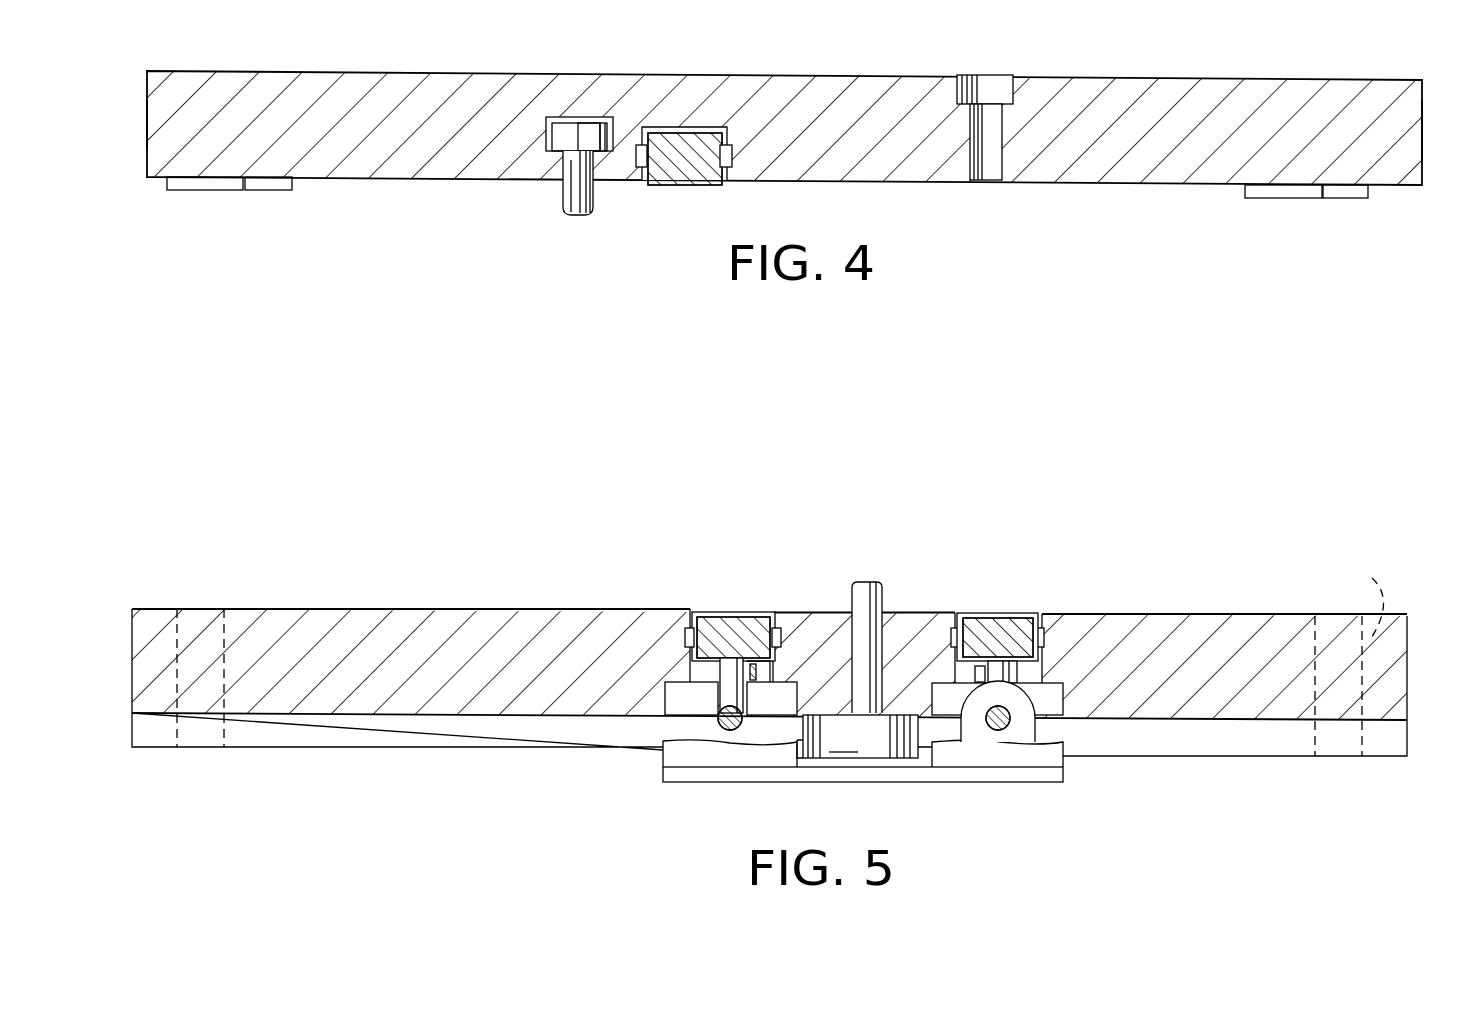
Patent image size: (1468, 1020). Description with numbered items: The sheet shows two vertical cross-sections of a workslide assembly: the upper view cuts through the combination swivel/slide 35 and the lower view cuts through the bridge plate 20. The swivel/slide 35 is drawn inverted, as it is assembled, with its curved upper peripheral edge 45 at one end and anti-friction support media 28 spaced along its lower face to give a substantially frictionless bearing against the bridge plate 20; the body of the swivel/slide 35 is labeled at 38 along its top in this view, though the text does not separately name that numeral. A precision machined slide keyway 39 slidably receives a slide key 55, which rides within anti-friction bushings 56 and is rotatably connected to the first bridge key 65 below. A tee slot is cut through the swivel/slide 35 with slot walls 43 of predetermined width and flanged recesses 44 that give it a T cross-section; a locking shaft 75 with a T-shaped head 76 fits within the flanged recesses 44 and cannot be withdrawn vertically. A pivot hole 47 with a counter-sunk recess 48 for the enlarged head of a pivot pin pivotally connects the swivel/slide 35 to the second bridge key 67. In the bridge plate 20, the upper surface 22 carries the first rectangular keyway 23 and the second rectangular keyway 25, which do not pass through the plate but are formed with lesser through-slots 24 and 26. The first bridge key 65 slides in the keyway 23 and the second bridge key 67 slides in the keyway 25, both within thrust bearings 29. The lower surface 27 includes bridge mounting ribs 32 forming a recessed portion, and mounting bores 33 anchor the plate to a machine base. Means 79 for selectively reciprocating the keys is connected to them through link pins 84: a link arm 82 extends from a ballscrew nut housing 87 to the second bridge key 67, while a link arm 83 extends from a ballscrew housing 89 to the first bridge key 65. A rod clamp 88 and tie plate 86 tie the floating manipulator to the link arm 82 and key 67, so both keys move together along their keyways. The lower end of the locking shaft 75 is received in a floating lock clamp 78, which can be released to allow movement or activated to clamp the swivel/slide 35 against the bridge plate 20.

In FIG. 5, the bridge plate 20 is at (770, 662).
In FIG. 5, the upper surface 22 is at (1228, 616).
In FIG. 5, the first rectangular keyway 23 is at (882, 612).
In FIG. 5, the through-slot 24 is at (762, 676).
In FIG. 5, the second rectangular keyway 25 is at (1013, 604).
In FIG. 5, the through-slot 26 is at (975, 672).
In FIG. 5, the lower surface 27 is at (1188, 722).
In FIG. 4, the anti-friction support media 28 is at (203, 192).
In FIG. 5, the thrust bearings 29 is at (782, 630).
In FIG. 5, the bridge mounting ribs 32 is at (153, 735).
In FIG. 5, the mounting bores 33 is at (1376, 582).
In FIG. 4, the combination swivel/slide 35 is at (1297, 86).
In FIG. 4, the board top surface 38 is at (365, 71).
In FIG. 4, the slide keyway 39 is at (698, 154).
In FIG. 4, the slot walls 43 is at (565, 185).
In FIG. 4, the flanged recesses 44 is at (560, 128).
In FIG. 4, the curved upper peripheral edge 45 is at (147, 121).
In FIG. 4, the pivot hole 47 is at (995, 165).
In FIG. 4, the counter-sunk recess 48 is at (1010, 88).
In FIG. 4, the slide key 55 is at (674, 172).
In FIG. 4, the bushings 56 is at (640, 166).
In FIG. 5, the first bridge key 65 is at (714, 617).
In FIG. 5, the second bridge key 67 is at (1002, 620).
In FIG. 4, the locking shaft 75 is at (576, 206).
In FIG. 5, the locking shaft 75 is at (862, 588).
In FIG. 4, the T-shaped head 76 is at (580, 130).
In FIG. 5, the floating lock clamp 78 is at (864, 736).
In FIG. 5, the means for selectively reciprocating the bridge keys 79 is at (824, 752).
In FIG. 5, the link arm 82 is at (1001, 735).
In FIG. 5, the link arm 83 is at (735, 732).
In FIG. 5, the link pin 84 is at (727, 695).
In FIG. 5, the tie plate 86 is at (710, 772).
In FIG. 5, the ballscrew nut housing 87 is at (975, 760).
In FIG. 5, the rod clamp 88 is at (1030, 728).
In FIG. 5, the ballscrew housing 89 is at (665, 760).